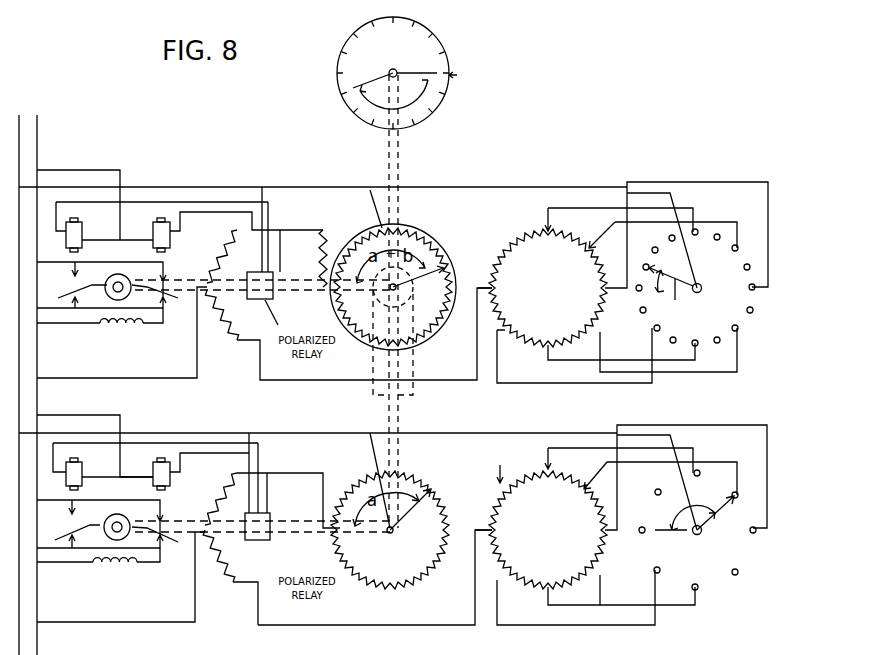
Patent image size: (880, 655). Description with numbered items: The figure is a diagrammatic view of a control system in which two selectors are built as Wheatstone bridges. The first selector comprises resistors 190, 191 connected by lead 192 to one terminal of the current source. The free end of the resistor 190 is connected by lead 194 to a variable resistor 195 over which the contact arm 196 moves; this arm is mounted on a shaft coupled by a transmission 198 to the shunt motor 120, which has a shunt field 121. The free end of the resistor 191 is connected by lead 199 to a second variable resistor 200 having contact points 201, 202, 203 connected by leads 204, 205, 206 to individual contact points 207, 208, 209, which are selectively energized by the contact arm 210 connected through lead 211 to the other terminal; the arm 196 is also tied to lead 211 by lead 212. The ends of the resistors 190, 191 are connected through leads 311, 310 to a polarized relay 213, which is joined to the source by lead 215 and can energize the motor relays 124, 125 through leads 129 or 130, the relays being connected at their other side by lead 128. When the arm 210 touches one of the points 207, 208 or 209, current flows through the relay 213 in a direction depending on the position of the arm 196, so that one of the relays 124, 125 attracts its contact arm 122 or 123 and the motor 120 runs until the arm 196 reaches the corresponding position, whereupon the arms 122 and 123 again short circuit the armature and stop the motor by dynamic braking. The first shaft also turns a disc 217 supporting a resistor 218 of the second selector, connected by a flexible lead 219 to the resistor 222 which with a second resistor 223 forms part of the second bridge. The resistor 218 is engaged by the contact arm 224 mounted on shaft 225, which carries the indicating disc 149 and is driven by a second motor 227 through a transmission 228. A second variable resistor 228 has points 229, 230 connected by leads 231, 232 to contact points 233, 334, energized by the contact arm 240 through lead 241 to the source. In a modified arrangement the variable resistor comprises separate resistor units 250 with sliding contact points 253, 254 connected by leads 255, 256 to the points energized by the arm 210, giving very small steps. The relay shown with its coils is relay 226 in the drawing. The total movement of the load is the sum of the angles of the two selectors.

The indicating disc 149 is at (450, 62).
The shaft 225 is at (400, 160).
The lead 241 is at (474, 190).
The lead 231 is at (597, 208).
The contact point 233 is at (697, 228).
The lead 232 is at (712, 223).
The contact 334 is at (738, 249).
The flexible lead 219 is at (324, 236).
The resistor 218 is at (417, 226).
The disc 217 is at (433, 237).
The resistor 222 is at (214, 256).
The polarized relay 226 is at (305, 293).
The second resistor 223 is at (220, 323).
The second motor 227 is at (110, 300).
The contact arm 224 is at (420, 287).
The second variable resistor 228 is at (548, 288).
The point 229 is at (530, 219).
The point 230 is at (582, 242).
The contact arm 240 is at (696, 294).
The lead 211 is at (498, 434).
The lead 128 is at (125, 442).
The lead 129 is at (210, 443).
The lead 130 is at (235, 452).
The relay 124 is at (89, 472).
The relay 125 is at (144, 474).
The lead 215 is at (262, 438).
The lead 310 is at (275, 485).
The lead 194 is at (287, 474).
The polarized relay 213 is at (267, 542).
The transmission 198 is at (284, 521).
The shunt motor 120 is at (126, 521).
The contact arm 122 is at (62, 535).
The contact arm 123 is at (165, 543).
The shunt field 121 is at (145, 567).
The lead 192 is at (152, 623).
The resistor 190 is at (217, 492).
The resistor 191 is at (217, 570).
The lead 311 is at (253, 578).
The lead 199 is at (328, 626).
The contact arm 196 is at (396, 531).
The lead 212 is at (374, 459).
The variable resistor 195 is at (431, 494).
The second variable resistor 200 is at (548, 530).
The contact point 201 is at (549, 453).
The contact point 202 is at (582, 496).
The contact point 203 is at (604, 536).
The lead 206 is at (728, 425).
The lead 204 is at (690, 447).
The lead 205 is at (718, 462).
The contact point 207 is at (700, 477).
The contact point 208 is at (735, 499).
The contact arm 210 is at (703, 535).
The contact point 209 is at (754, 534).
The resistor unit 250 is at (460, 628).
The sliding contact point 253 is at (490, 628).
The sliding contact point 254 is at (548, 626).
The lead 255 is at (600, 627).
The lead 256 is at (656, 640).